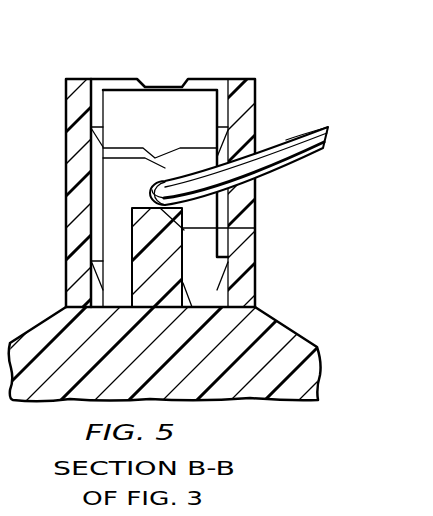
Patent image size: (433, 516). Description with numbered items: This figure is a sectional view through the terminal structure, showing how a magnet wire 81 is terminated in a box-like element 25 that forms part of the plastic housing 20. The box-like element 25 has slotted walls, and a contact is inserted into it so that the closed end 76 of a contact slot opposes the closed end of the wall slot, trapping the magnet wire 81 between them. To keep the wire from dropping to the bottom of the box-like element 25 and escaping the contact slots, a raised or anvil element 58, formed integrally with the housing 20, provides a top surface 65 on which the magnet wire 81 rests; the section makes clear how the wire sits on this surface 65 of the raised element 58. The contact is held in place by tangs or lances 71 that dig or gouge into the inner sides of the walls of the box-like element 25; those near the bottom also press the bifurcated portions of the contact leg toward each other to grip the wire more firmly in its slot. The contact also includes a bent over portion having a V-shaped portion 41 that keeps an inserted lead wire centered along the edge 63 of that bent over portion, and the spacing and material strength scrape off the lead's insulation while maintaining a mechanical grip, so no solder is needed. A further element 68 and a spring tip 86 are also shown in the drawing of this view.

The plastic housing 20 is at (272, 378).
The box-like element 25 is at (75, 102).
The V-shaped portion 41 is at (158, 167).
The raised element 58 is at (183, 284).
The edge 63 is at (143, 152).
The top surface 65 is at (256, 228).
The cap member 68 is at (202, 98).
The tangs or lances 71 is at (228, 130).
The closed end of slot 76 is at (160, 177).
The magnet wire 81 is at (298, 160).
The spring tip 86 is at (286, 140).